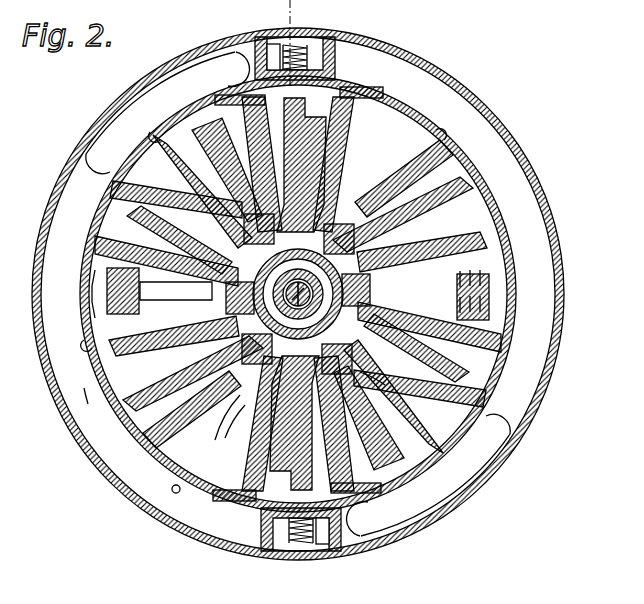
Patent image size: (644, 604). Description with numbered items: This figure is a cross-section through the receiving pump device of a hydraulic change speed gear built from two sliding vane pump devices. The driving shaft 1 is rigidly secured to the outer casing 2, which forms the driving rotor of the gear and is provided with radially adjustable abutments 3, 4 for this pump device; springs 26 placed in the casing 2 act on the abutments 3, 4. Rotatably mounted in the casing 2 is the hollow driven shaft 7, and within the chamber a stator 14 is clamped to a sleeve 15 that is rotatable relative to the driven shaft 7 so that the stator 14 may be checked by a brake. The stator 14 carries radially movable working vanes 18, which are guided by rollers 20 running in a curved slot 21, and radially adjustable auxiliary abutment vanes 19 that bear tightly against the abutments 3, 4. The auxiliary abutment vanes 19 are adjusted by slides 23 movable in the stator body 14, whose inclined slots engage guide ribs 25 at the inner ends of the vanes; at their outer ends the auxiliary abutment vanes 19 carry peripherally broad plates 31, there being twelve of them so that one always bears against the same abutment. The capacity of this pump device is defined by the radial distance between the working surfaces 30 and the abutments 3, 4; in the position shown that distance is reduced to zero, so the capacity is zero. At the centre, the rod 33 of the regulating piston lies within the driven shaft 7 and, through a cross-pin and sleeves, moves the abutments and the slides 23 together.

The driving shaft 1 is at (140, 548).
The outer casing 2 is at (469, 87).
The abutment 3 is at (347, 84).
The abutment 4 is at (255, 520).
The driven shaft 7 is at (178, 491).
The stator 14 is at (88, 405).
The sleeve 15 is at (210, 288).
The working vanes 18 is at (495, 197).
The auxiliary abutment vanes 19 is at (163, 140).
The rollers 20 is at (437, 449).
The curved slot 21 is at (236, 413).
The slides 23 is at (482, 278).
The guide ribs 25 is at (480, 300).
The springs 26 is at (312, 36).
The working surfaces 30 is at (92, 297).
The plates 31 is at (391, 130).
The rod 33 is at (372, 385).